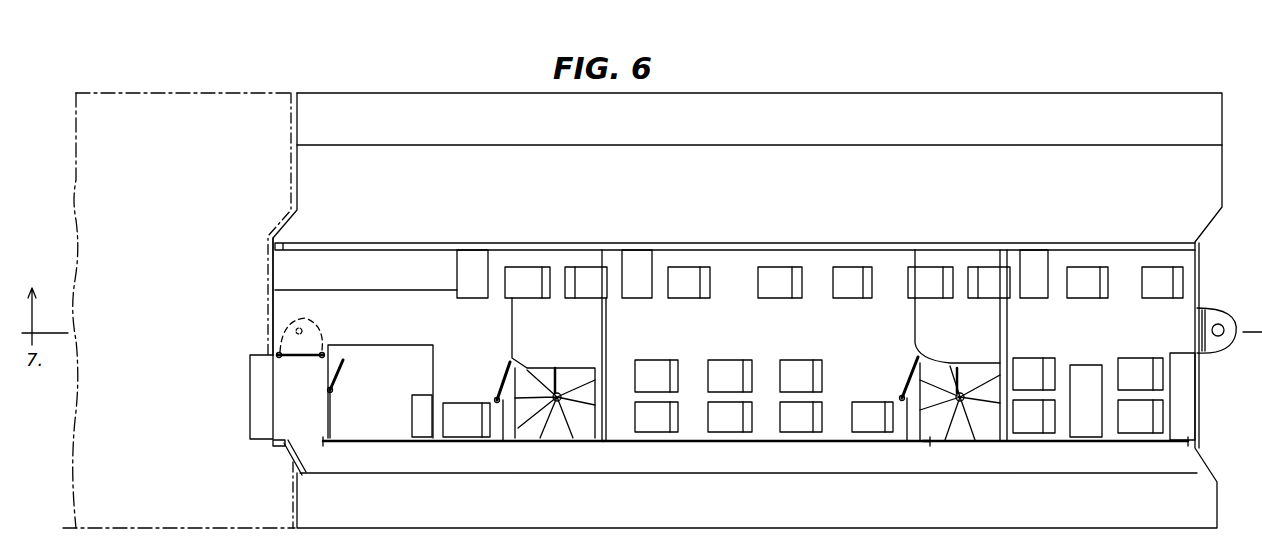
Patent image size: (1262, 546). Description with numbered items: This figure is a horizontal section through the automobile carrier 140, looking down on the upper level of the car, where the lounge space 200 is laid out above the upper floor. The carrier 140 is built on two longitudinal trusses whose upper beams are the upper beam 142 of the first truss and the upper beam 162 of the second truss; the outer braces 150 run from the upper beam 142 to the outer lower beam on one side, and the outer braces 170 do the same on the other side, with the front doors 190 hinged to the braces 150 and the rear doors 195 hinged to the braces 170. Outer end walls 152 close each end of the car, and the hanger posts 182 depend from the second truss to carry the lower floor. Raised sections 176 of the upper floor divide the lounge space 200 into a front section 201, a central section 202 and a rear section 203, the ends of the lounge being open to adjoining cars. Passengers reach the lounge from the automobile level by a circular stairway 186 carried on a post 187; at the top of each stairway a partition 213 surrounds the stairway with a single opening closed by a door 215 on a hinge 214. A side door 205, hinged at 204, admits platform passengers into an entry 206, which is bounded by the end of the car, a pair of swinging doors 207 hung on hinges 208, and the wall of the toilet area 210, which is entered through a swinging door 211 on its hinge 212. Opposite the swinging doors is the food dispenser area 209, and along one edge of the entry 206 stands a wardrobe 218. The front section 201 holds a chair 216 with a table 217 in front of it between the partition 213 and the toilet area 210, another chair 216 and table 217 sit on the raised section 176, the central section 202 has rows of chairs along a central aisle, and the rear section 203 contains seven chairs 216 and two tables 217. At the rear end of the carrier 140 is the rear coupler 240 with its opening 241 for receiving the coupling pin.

The automobile carrier 140 is at (135, 90).
The upper beam 142 is at (553, 248).
The outer braces 150 is at (800, 191).
The outer end walls 152 is at (272, 297).
The upper beam 162 is at (405, 443).
The outer braces 170 is at (603, 462).
The raised sections 176 is at (561, 324).
The hanger posts 182 is at (330, 445).
The circular stairway 186 is at (555, 425).
The post 187 is at (553, 380).
The front door 190 is at (500, 102).
The rear door 195 is at (1035, 515).
The lounge space 200 is at (800, 317).
The front section 201 is at (390, 285).
The central section 202 is at (728, 290).
The rear section 203 is at (1125, 297).
The hinge 204 is at (280, 445).
The door 205 is at (300, 462).
The entry 206 is at (293, 413).
The swinging doors 207 is at (318, 352).
The hinge 208 is at (322, 355).
The food dispenser area 209 is at (327, 265).
The toilet area 210 is at (385, 370).
The swinging door 211 is at (338, 375).
The hinge 212 is at (334, 395).
The partition 213 is at (600, 375).
The hinge 214 is at (498, 400).
The door 215 is at (505, 380).
The chair 216 is at (518, 275).
The table 217 is at (468, 262).
The wardrobe 218 is at (258, 395).
The rear coupler 240 is at (1210, 310).
The opening 241 is at (1223, 325).